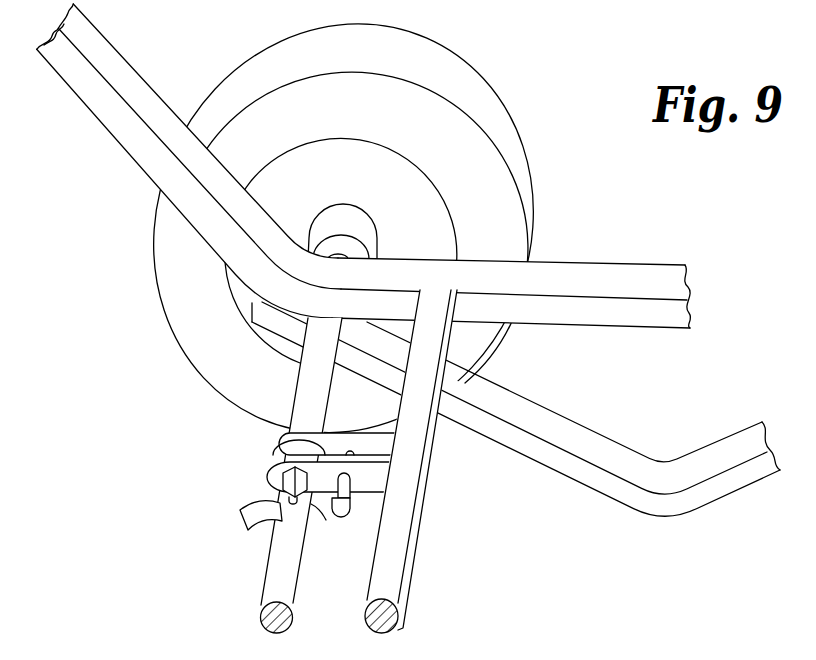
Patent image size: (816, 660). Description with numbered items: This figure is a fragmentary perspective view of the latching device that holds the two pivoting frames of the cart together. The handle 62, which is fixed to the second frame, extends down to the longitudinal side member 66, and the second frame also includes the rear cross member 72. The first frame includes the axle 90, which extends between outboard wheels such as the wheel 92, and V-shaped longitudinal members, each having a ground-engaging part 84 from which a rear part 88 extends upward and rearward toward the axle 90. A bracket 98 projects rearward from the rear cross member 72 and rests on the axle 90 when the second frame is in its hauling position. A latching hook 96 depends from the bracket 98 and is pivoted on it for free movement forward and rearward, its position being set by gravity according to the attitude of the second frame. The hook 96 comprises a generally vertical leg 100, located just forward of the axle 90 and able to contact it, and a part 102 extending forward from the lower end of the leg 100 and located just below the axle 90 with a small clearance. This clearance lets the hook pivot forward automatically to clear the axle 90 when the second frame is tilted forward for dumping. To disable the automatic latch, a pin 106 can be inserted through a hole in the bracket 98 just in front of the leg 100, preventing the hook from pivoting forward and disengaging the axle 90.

The handle 62 is at (90, 110).
The longitudinal side member 66 is at (618, 272).
The outboard wheel 92 is at (167, 310).
The rear part 88 is at (572, 433).
The ground-engaging part 84 is at (660, 518).
The bracket 98 is at (275, 480).
The part extending forward 102 is at (247, 528).
The latching hook 96 is at (250, 532).
The vertical leg 100 is at (322, 517).
The pin 106 is at (350, 483).
The rear cross member 72 is at (415, 560).
The axle 90 is at (265, 597).